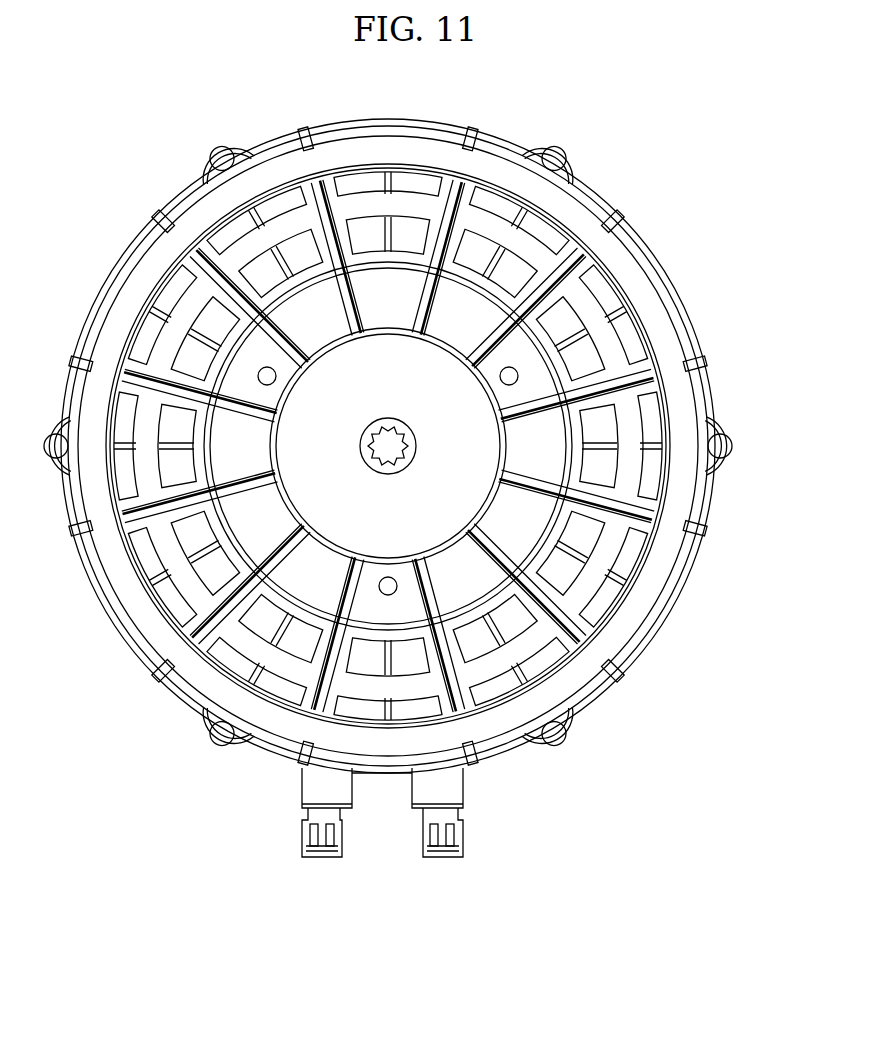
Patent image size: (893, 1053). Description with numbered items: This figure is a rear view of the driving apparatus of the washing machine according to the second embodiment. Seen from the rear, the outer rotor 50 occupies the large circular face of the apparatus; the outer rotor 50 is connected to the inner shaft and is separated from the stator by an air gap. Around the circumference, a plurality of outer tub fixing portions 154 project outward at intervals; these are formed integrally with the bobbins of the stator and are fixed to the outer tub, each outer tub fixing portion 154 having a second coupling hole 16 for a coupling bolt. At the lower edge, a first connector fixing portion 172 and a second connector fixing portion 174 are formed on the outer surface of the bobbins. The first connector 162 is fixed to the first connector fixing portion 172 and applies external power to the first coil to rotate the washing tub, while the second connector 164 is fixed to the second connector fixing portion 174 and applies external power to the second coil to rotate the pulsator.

The outer rotor 50 is at (416, 200).
The outer tub fixing portion 154 is at (738, 445).
The second coupling hole 16 is at (727, 455).
The first connector fixing portion 172 is at (305, 794).
The second connector fixing portion 174 is at (460, 794).
The first connector 162 is at (320, 852).
The second connector 164 is at (442, 852).